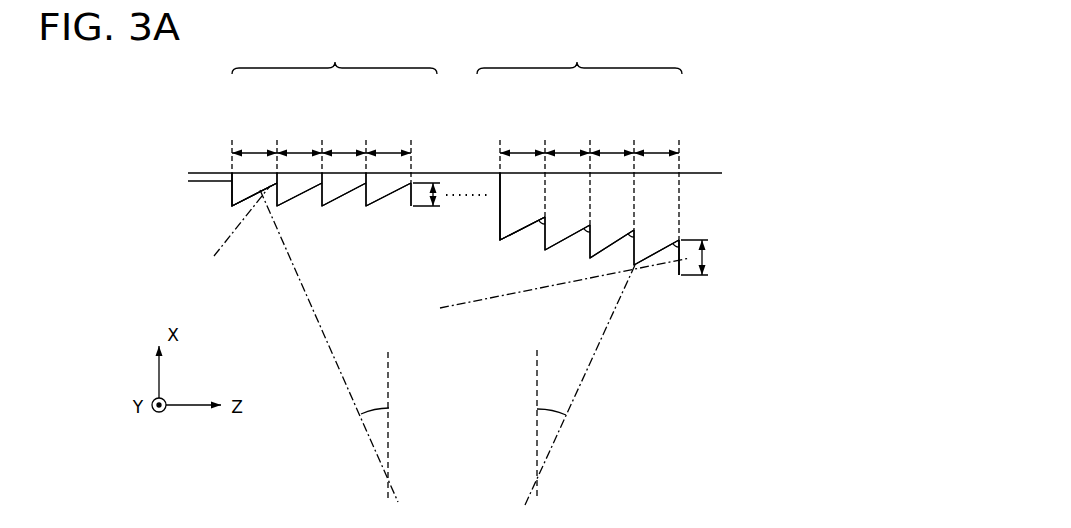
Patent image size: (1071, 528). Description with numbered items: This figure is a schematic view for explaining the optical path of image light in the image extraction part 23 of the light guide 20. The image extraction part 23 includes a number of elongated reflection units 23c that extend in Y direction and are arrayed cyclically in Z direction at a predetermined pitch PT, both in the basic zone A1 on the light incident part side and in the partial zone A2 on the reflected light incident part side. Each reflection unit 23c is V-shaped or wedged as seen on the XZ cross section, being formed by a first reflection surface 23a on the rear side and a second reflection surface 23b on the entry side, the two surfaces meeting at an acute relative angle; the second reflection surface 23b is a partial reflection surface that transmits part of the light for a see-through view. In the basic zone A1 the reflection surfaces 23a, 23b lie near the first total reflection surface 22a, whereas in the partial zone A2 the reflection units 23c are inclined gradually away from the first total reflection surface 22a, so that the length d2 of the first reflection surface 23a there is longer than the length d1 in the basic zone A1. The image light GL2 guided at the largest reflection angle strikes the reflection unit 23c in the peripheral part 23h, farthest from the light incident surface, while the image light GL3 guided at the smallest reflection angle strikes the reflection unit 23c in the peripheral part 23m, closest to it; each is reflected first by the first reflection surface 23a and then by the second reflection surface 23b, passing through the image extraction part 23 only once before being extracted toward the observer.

The light guide plate 20 is at (713, 61).
The first total reflection surface 22a is at (208, 172).
The image extraction part 23 is at (210, 40).
The first reflection surface 23a is at (411, 207).
The second reflection surface 23b is at (248, 200).
The reflection unit 23c is at (255, 136).
The peripheral part 23h is at (690, 284).
The peripheral part 23m is at (223, 234).
The basic zone A1 is at (334, 56).
The partial zone A2 is at (579, 56).
The pitch PT is at (397, 190).
The length of the first reflection surface d1 is at (436, 192).
The length of the first reflection surface d2 is at (703, 257).
The image light GL3 is at (320, 340).
The image light GL2 is at (583, 388).